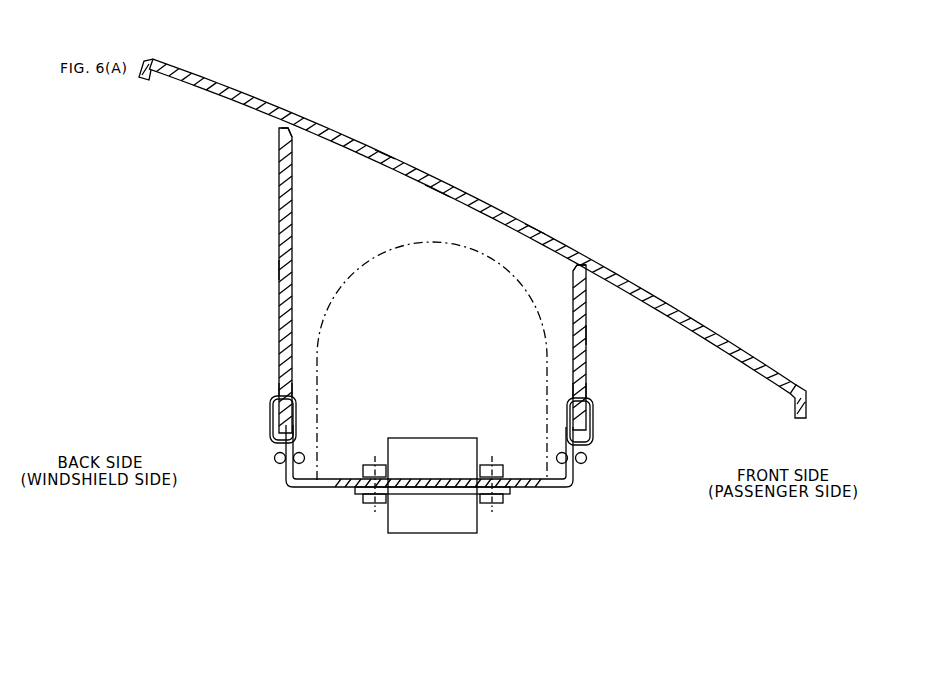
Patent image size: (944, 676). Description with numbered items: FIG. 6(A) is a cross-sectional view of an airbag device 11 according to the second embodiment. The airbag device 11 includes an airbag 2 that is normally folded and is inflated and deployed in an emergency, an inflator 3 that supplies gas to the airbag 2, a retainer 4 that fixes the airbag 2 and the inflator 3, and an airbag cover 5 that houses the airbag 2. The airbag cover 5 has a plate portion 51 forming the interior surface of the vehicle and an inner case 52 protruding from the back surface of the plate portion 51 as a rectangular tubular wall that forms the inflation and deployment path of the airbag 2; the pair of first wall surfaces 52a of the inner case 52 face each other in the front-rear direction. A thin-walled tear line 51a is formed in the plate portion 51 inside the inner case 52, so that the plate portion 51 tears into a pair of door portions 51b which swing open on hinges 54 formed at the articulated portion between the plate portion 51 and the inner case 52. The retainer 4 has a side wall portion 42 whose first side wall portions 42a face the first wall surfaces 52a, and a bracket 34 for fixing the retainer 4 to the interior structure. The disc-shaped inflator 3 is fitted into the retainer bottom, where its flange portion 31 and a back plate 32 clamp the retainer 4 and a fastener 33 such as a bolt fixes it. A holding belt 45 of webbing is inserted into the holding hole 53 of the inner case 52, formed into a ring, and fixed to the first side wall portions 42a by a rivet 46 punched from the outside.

The airbag 2 is at (363, 256).
The inflator 3 is at (432, 507).
The retainer 4 is at (395, 474).
The airbag cover 5 is at (171, 129).
The airbag device 11 is at (533, 140).
The flange portion 31 is at (433, 490).
The back plate 32 is at (434, 475).
The fastener 33 is at (370, 507).
The bracket 34 is at (316, 514).
The side wall portion 42 is at (429, 456).
The first side wall portions 42a is at (300, 437).
The holding belt 45 is at (271, 410).
The rivet 46 is at (275, 457).
The plate portion 51 is at (253, 97).
The tear line 51a is at (436, 191).
The door portions 51b is at (383, 152).
The inner case 52 is at (247, 209).
The first wall surfaces 52a is at (279, 268).
The holding hole 53 is at (279, 388).
The hinge 54 is at (279, 131).